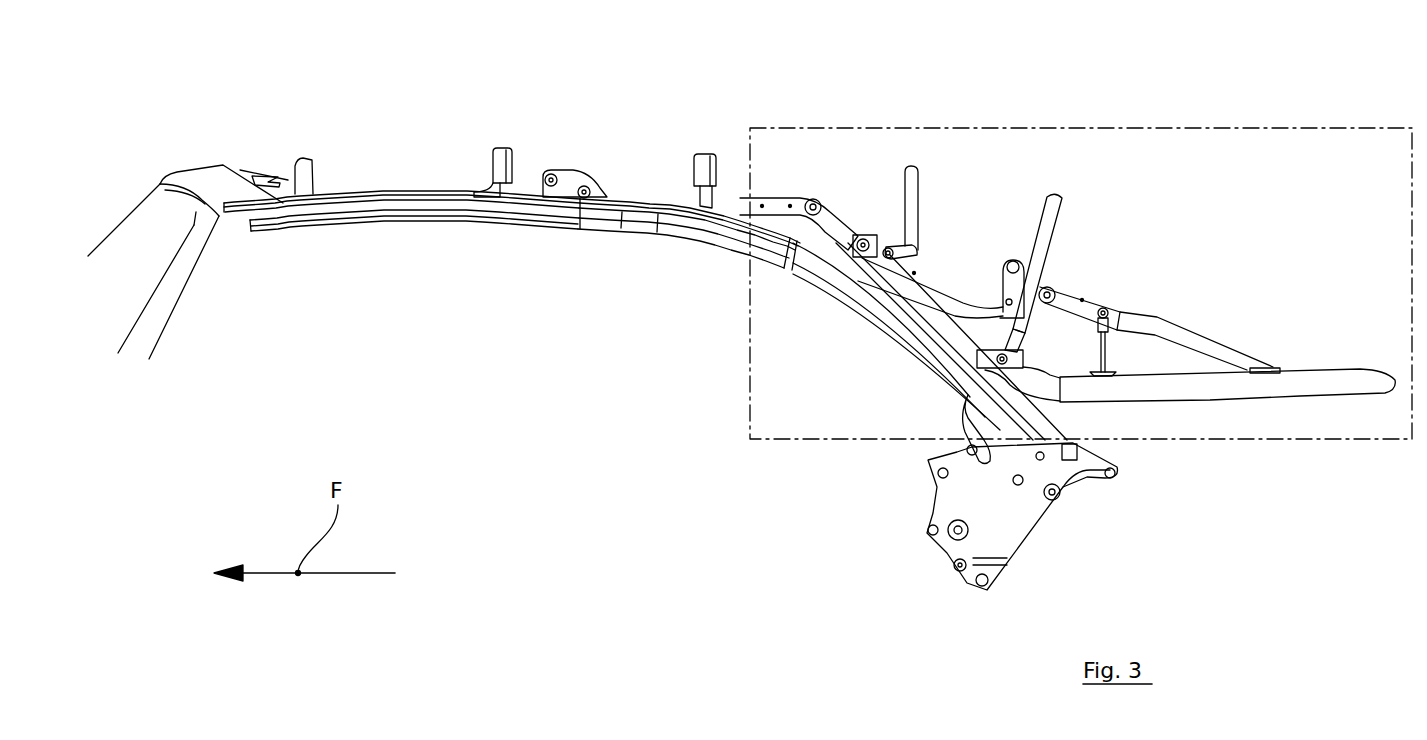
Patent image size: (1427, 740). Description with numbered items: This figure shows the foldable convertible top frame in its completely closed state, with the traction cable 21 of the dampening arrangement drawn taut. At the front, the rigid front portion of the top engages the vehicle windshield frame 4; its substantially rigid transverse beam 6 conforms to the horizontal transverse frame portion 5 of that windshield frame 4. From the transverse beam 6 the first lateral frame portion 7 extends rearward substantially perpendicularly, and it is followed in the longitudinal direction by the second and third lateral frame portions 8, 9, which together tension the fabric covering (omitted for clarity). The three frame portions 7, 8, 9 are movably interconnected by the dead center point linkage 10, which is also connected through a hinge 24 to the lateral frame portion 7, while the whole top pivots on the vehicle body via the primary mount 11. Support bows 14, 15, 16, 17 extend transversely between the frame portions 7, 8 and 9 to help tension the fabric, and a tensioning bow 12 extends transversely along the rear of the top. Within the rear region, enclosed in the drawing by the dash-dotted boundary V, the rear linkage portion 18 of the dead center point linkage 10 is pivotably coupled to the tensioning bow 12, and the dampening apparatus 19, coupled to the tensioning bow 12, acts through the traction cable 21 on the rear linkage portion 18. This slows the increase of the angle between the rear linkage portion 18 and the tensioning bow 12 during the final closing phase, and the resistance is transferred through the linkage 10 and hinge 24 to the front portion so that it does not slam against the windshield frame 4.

The vehicle windshield frame 4 is at (142, 174).
The horizontal transverse frame portion 5 is at (193, 204).
The transverse beam 6 is at (204, 184).
The lateral frame portion 7 is at (467, 204).
The lateral frame portion 8 is at (698, 230).
The lateral frame portion 9 is at (905, 327).
The dead center point linkage 10 is at (847, 202).
The primary mount 11 is at (1010, 520).
The tensioning bow 12 is at (1348, 380).
The support bow 14 is at (502, 160).
The support bow 15 is at (702, 163).
The support bow 16 is at (912, 187).
The support bow 17 is at (1053, 205).
The rear linkage portion 18 is at (1203, 348).
The dampening apparatus 19 is at (1082, 354).
The traction cable 21 is at (1107, 358).
The hinge 24 is at (579, 156).
The rear linkage region V is at (1277, 438).